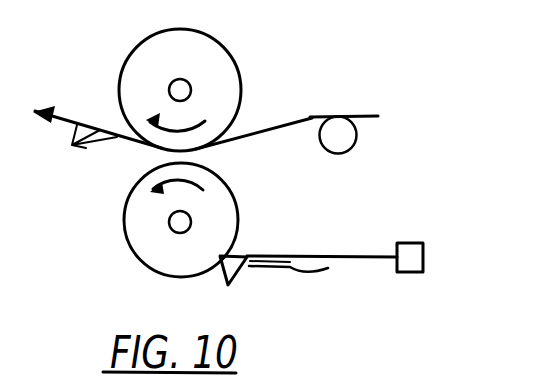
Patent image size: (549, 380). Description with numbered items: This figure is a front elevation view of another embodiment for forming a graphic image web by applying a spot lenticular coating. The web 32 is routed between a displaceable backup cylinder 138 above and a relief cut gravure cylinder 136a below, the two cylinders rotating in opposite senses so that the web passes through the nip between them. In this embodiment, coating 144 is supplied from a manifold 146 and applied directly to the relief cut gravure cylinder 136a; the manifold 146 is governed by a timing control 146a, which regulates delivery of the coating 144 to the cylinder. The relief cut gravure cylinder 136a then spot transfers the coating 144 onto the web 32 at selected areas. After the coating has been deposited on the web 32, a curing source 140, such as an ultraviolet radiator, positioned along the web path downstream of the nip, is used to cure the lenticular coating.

The backup cylinder 138 is at (218, 43).
The web 32 is at (312, 118).
The curing source 140 is at (72, 145).
The relief cut gravure cylinder 136a is at (126, 202).
The manifold 146 is at (278, 256).
The timing control 146a is at (430, 225).
The coating 144 is at (280, 262).